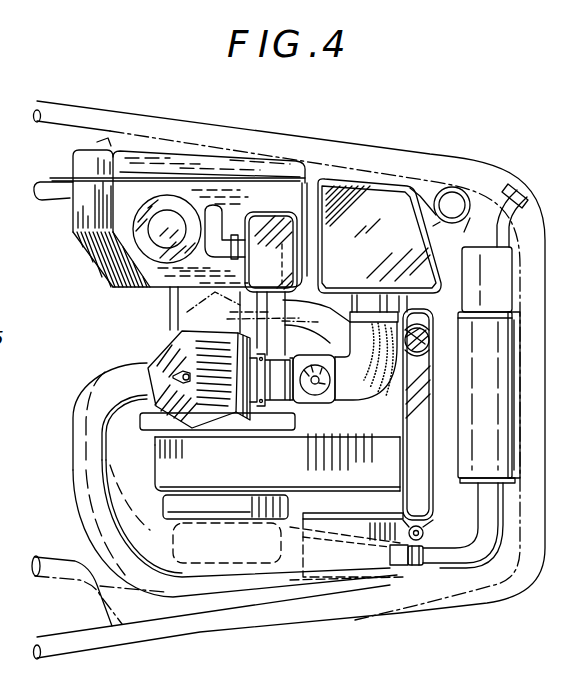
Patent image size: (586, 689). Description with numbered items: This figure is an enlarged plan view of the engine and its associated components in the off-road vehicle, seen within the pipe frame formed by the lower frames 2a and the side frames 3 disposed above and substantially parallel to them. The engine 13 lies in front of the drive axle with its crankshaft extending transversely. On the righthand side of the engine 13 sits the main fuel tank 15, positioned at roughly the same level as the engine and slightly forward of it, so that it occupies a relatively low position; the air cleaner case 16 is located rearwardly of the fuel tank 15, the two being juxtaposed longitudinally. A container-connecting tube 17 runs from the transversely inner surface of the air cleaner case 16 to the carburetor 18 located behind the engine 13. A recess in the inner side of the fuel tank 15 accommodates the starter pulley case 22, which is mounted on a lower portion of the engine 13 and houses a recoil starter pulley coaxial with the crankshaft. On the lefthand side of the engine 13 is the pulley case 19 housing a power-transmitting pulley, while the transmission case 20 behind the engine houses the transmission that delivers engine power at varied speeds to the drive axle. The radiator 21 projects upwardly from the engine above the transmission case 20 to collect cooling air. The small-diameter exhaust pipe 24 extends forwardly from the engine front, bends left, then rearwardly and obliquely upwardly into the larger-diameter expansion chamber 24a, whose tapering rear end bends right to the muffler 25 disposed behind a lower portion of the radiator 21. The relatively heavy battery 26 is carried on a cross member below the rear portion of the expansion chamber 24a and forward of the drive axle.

The side frames 3 is at (78, 110).
The lower frames 2a is at (86, 133).
The main fuel tank 15 is at (138, 170).
The starter pulley case 22 is at (280, 245).
The air cleaner case 16 is at (383, 200).
The engine 13 is at (170, 325).
The carburetor 18 is at (315, 394).
The container-connecting tube 17 is at (396, 365).
The radiator 21 is at (425, 408).
The transmission case 20 is at (462, 425).
The muffler 25 is at (509, 338).
The pulley case 19 is at (441, 482).
The battery 26 is at (400, 570).
The exhaust pipe 24 is at (88, 392).
The expansion chamber 24a is at (160, 577).